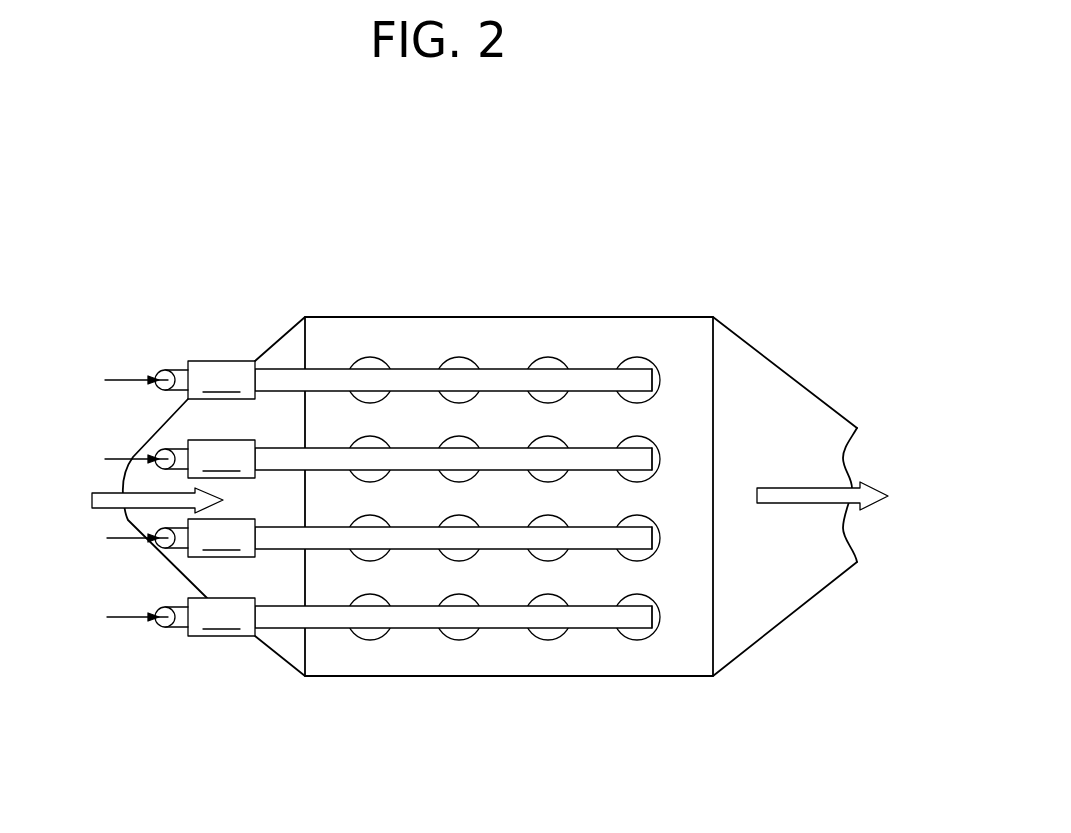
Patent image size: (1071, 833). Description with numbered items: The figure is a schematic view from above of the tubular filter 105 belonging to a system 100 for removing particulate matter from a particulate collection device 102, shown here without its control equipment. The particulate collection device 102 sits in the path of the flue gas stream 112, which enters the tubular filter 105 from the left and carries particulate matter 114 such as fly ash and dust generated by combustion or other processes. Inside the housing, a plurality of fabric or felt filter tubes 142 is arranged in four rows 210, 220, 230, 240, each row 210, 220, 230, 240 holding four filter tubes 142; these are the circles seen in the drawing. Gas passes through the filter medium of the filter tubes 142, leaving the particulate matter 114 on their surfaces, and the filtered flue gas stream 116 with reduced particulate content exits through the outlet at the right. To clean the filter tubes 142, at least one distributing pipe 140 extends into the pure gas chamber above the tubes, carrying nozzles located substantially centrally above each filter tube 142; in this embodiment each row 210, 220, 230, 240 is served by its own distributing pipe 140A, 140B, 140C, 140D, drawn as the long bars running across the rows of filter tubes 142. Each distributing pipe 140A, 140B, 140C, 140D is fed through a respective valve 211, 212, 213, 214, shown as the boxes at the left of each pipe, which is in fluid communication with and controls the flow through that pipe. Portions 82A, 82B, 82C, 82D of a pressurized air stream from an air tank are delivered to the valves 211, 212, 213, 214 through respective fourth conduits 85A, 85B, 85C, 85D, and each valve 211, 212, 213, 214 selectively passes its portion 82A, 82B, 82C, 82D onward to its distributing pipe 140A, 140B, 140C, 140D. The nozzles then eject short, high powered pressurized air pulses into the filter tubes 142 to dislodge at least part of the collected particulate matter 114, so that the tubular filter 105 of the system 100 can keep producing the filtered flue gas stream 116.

The system 100 is at (470, 245).
The particulate collection device 102 is at (678, 702).
The tubular filter 105 is at (345, 677).
The flue gas stream 112 is at (100, 508).
The particulate matter 114 is at (120, 498).
The filtered flue gas stream 116 is at (780, 487).
The distributing pipe 140 is at (418, 592).
The first distributing pipe 140A is at (273, 390).
The second distributing pipe 140B is at (277, 469).
The third distributing pipe 140C is at (280, 545).
The fourth distributing pipe 140D is at (332, 629).
The filter tubes 142 is at (627, 639).
The first row 210 is at (662, 369).
The second row 220 is at (662, 448).
The third row 230 is at (662, 527).
The fourth row 240 is at (662, 606).
The first valve 211 is at (221, 380).
The second valve 212 is at (221, 459).
The third valve 213 is at (221, 538).
The fourth valve 214 is at (221, 617).
The first portion of the air stream 82A is at (122, 378).
The second portion of the air stream 82B is at (118, 457).
The third portion of the air stream 82C is at (123, 540).
The fourth portion of the air stream 82D is at (130, 619).
The first fourth conduit 85A is at (175, 367).
The second fourth conduit 85B is at (173, 447).
The third fourth conduit 85C is at (180, 549).
The fourth fourth conduit 85D is at (180, 628).